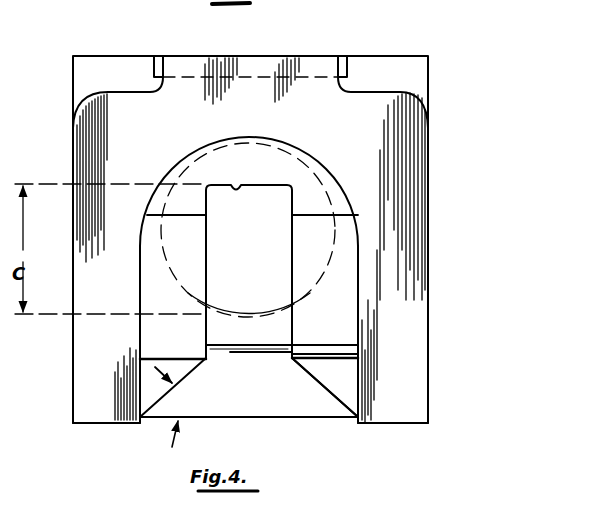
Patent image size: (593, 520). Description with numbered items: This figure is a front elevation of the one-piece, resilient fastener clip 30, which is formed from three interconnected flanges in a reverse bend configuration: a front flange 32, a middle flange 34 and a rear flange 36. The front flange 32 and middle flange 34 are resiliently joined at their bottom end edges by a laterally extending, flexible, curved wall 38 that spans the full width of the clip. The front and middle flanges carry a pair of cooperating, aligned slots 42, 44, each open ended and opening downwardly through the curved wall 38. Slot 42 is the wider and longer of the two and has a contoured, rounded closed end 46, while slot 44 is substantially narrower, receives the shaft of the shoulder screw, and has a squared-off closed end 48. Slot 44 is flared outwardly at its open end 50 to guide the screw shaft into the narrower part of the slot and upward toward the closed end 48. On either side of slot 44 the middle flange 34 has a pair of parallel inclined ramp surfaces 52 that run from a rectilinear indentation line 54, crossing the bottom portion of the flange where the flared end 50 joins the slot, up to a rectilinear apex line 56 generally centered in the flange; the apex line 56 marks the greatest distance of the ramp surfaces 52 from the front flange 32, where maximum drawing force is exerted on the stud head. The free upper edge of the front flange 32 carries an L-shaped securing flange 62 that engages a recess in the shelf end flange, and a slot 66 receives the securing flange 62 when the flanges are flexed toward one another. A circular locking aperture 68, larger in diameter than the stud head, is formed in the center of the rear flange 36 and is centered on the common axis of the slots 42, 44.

The fastener clip 30 is at (402, 42).
The front flange 32 is at (126, 147).
The middle flange 34 is at (110, 78).
The rear flange 36 is at (236, 397).
The curved wall 38 is at (106, 425).
The slot 42 is at (360, 290).
The slot 44 is at (285, 339).
The closed end 46 is at (322, 178).
The closed end 48 is at (237, 190).
The open end 50 is at (330, 394).
The inclined ramp surfaces 52 is at (249, 332).
The indentation line 54 is at (140, 357).
The apex line 56 is at (181, 214).
The securing flange 62 is at (197, 72).
The slot 66 is at (350, 62).
The locking aperture 68 is at (218, 313).